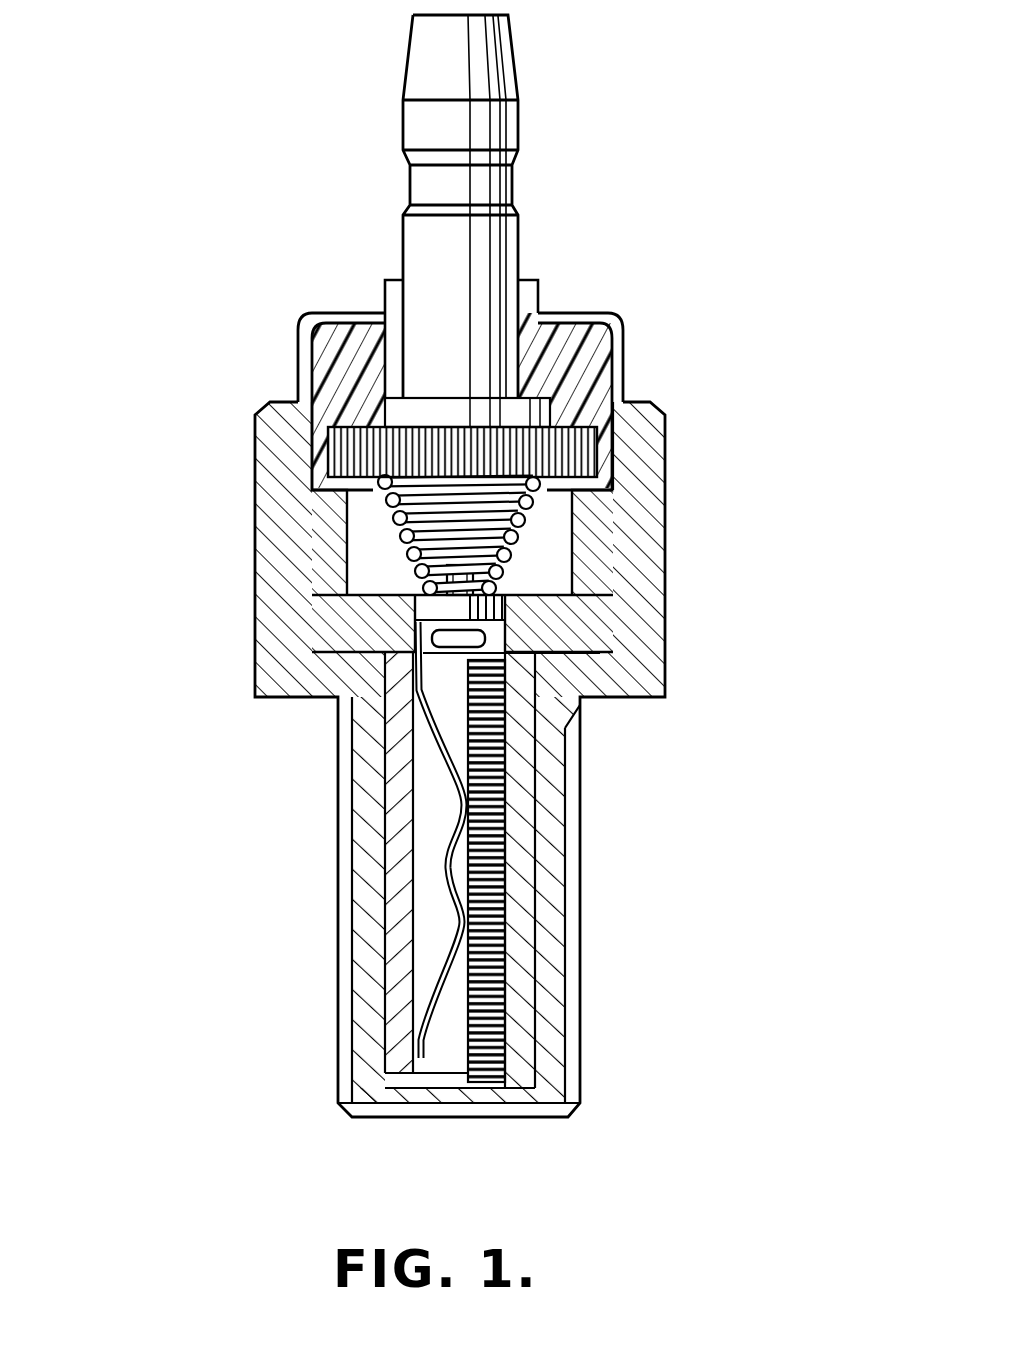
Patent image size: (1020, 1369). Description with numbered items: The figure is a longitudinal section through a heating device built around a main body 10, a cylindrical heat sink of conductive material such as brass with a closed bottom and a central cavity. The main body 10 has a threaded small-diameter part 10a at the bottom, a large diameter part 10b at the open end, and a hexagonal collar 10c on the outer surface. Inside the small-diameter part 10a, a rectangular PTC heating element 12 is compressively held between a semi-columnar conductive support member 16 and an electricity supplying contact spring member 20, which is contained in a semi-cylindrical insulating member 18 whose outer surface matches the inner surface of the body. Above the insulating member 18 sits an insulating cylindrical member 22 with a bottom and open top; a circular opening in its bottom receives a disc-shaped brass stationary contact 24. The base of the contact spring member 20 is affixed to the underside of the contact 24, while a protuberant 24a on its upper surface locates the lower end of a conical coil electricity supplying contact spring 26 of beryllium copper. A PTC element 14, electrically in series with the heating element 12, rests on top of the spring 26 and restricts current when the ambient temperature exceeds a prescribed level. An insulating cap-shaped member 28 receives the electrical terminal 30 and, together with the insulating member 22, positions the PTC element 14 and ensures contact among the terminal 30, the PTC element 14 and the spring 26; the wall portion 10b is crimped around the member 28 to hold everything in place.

The main body 10 is at (235, 640).
The small-diameter part 10a is at (372, 1027).
The large diameter part 10b is at (298, 345).
The collar 10c is at (262, 452).
The PTC heating element 12 is at (505, 797).
The PTC element 14 is at (550, 450).
The support member 16 is at (515, 862).
The semi-cylindrical insulating member 18 is at (397, 923).
The electricity supplying contact spring member 20 is at (440, 993).
The insulating cylindrical member 22 is at (590, 543).
The stationary contact 24 is at (477, 603).
The protuberant 24a is at (445, 575).
The electricity supplying contact spring 26 is at (527, 505).
The cap-shaped member 28 is at (570, 372).
The electrical terminal 30 is at (478, 190).